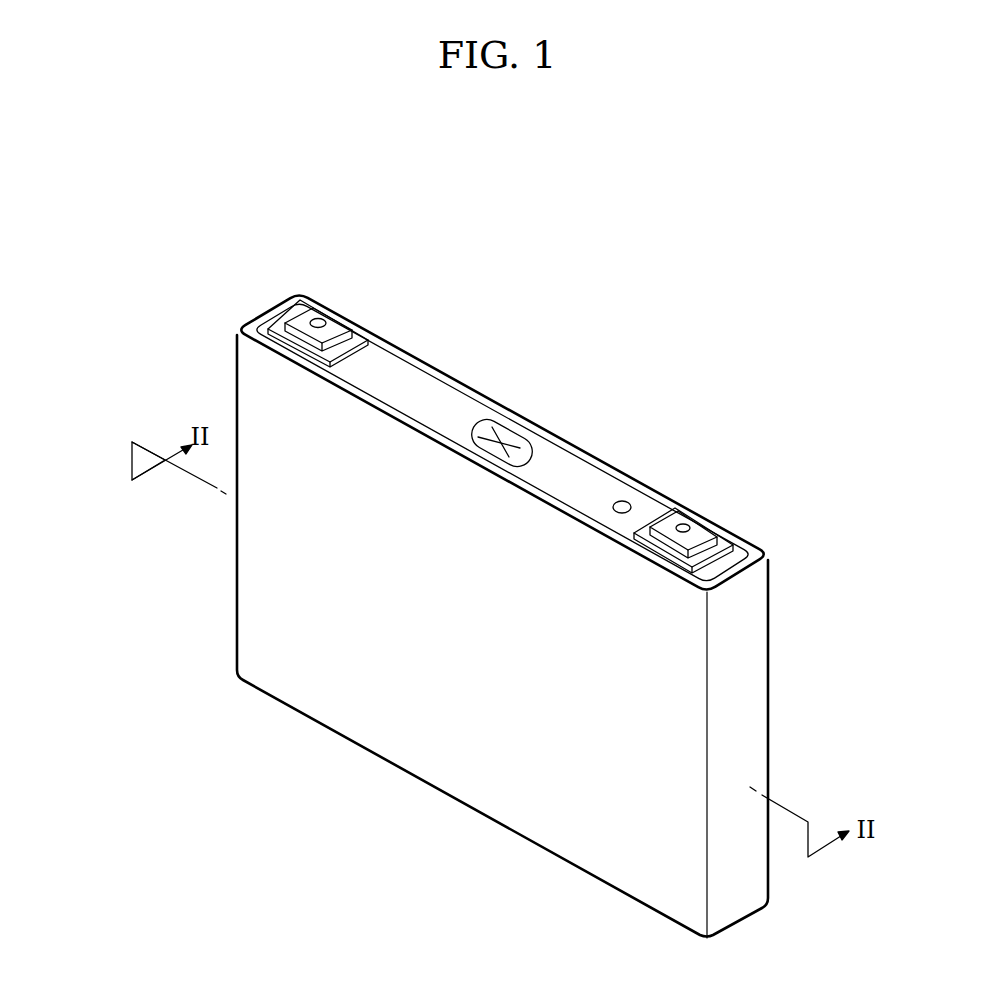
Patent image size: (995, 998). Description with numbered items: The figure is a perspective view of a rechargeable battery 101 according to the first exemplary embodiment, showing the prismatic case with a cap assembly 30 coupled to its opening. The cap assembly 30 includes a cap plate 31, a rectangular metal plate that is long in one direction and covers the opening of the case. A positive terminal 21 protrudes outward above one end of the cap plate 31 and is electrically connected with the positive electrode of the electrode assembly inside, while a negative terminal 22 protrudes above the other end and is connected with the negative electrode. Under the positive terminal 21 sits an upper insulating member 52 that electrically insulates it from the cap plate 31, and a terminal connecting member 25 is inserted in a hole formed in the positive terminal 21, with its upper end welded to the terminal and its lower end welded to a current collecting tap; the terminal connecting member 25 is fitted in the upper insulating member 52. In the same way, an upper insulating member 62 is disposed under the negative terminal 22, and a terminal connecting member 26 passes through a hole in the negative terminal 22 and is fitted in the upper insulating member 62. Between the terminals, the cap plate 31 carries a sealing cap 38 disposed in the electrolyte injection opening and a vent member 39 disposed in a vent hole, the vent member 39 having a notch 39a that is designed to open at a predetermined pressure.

The rechargeable battery 101 is at (536, 235).
The positive terminal 21 is at (342, 316).
The negative terminal 22 is at (720, 540).
The terminal connecting member 25 is at (313, 311).
The terminal connecting member 26 is at (445, 758).
The cap assembly 30 is at (583, 451).
The cap plate 31 is at (438, 403).
The sealing cap 38 is at (622, 501).
The vent member 39 is at (500, 437).
The notch 39a is at (517, 448).
The upper insulating member 52 is at (278, 330).
The upper insulating member 62 is at (728, 545).